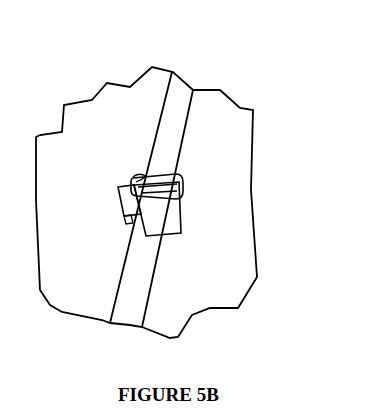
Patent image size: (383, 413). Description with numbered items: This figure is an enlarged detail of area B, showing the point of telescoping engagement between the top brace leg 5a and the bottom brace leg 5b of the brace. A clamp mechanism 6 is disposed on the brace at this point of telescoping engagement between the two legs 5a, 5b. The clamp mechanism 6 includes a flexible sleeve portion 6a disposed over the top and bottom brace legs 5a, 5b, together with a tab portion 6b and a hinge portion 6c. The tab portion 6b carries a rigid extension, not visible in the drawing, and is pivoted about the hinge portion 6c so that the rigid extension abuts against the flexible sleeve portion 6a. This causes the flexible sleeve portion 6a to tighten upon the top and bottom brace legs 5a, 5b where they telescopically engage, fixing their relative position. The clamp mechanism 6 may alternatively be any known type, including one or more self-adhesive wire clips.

The area B is at (238, 105).
The top brace leg 5a is at (190, 122).
The bottom brace leg 5b is at (152, 295).
The clamp mechanism 6 is at (149, 201).
The flexible sleeve portion 6a is at (143, 176).
The tab portion 6b is at (143, 218).
The hinge portion 6c is at (140, 175).